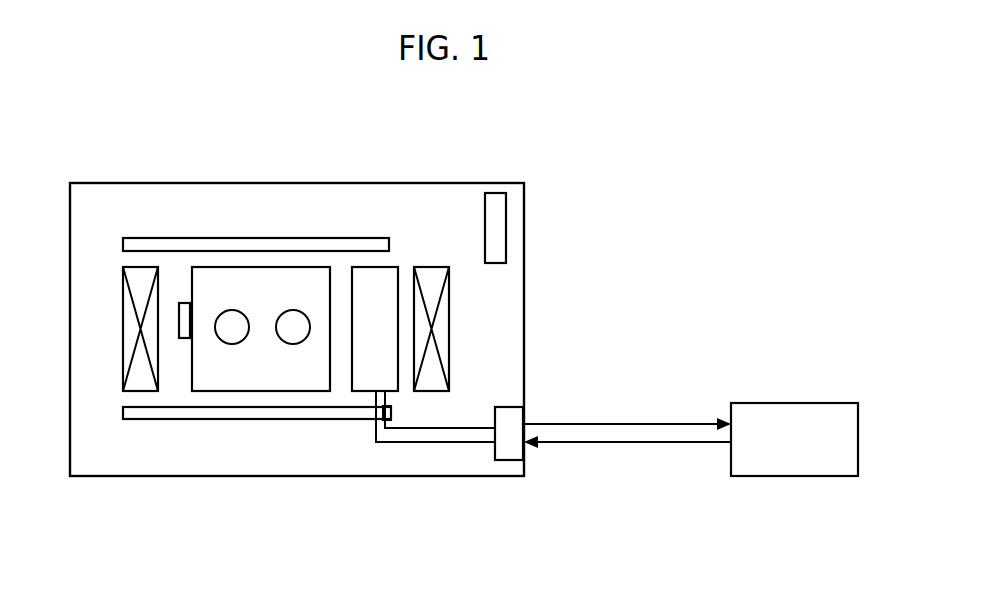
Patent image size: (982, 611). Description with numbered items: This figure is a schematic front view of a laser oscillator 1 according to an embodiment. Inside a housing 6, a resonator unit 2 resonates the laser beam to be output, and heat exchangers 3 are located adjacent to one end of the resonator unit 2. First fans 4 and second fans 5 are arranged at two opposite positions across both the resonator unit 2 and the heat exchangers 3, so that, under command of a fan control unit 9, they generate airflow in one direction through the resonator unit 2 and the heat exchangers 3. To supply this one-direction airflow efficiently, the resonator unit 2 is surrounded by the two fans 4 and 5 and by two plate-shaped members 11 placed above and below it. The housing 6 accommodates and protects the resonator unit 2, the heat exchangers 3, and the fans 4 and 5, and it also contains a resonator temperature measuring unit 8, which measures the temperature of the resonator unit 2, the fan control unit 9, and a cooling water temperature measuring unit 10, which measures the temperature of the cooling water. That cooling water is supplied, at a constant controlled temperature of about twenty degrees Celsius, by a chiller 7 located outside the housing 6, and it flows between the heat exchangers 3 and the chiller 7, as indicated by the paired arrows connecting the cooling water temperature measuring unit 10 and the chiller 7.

The laser oscillator 1 is at (614, 153).
The resonator unit 2 is at (291, 277).
The heat exchangers 3 is at (386, 282).
The first fans 4 is at (141, 278).
The second fans 5 is at (433, 282).
The housing 6 is at (525, 293).
The chiller 7 is at (829, 418).
The resonator temperature measuring unit 8 is at (185, 308).
The fan control unit 9 is at (496, 213).
The cooling water temperature measuring unit 10 is at (508, 445).
The plate-shaped members 11 is at (247, 245).